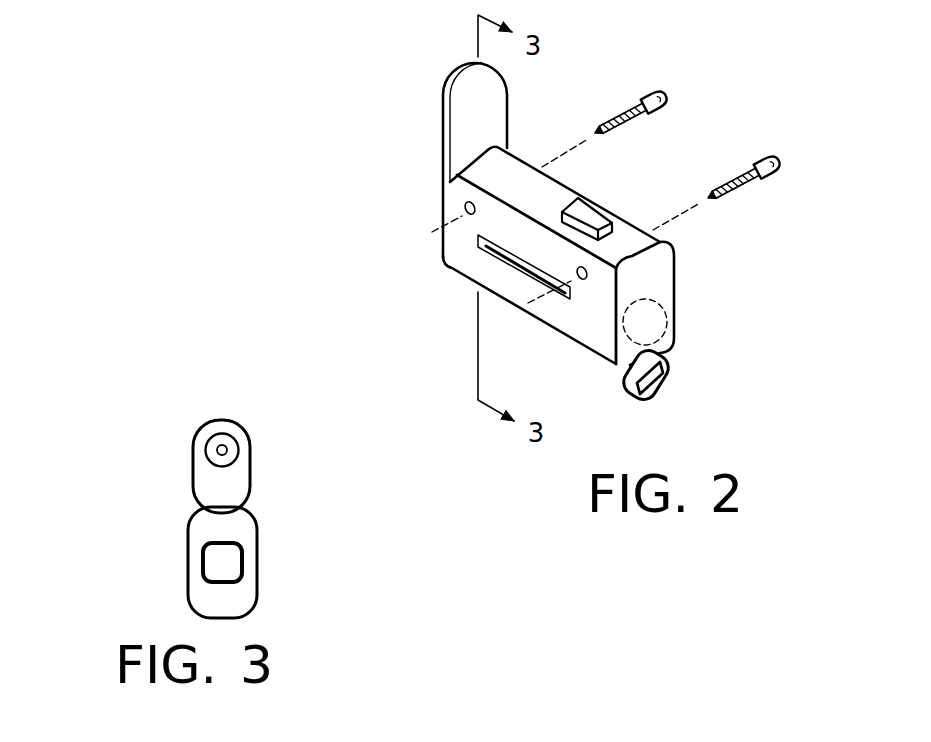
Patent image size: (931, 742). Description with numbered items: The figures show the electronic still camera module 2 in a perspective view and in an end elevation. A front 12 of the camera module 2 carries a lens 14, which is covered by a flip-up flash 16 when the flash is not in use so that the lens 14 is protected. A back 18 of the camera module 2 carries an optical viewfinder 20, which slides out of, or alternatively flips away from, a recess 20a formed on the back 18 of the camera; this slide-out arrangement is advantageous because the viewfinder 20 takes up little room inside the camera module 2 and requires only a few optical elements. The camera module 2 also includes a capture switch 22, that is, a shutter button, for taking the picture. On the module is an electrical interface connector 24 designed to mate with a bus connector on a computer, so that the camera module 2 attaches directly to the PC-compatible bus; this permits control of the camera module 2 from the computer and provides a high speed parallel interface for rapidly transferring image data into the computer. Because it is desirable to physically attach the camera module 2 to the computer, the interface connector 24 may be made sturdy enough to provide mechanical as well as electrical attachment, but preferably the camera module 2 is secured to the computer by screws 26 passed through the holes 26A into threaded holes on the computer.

In FIG. 2, the camera module 2 is at (532, 344).
In FIG. 3, the camera module 2 is at (257, 510).
In FIG. 3, the front 12 is at (228, 533).
In FIG. 3, the lens 14 is at (186, 551).
In FIG. 2, the flip-up flash 16 is at (497, 101).
In FIG. 3, the flip-up flash 16 is at (168, 461).
In FIG. 2, the back 18 is at (657, 270).
In FIG. 2, the optical viewfinder 20 is at (680, 377).
In FIG. 2, the recess 20a is at (640, 320).
In FIG. 2, the capture switch 22 is at (607, 212).
In FIG. 2, the electrical interface connector 24 is at (488, 247).
In FIG. 2, the screws 26 is at (662, 93).
In FIG. 2, the holes 26A is at (466, 208).